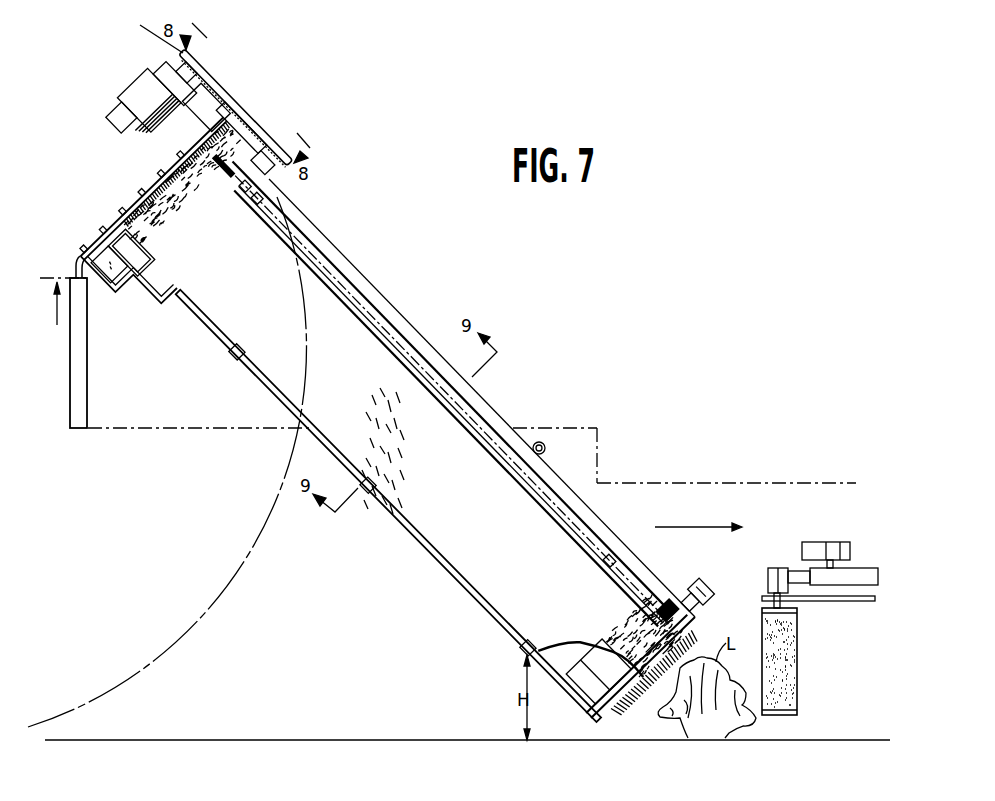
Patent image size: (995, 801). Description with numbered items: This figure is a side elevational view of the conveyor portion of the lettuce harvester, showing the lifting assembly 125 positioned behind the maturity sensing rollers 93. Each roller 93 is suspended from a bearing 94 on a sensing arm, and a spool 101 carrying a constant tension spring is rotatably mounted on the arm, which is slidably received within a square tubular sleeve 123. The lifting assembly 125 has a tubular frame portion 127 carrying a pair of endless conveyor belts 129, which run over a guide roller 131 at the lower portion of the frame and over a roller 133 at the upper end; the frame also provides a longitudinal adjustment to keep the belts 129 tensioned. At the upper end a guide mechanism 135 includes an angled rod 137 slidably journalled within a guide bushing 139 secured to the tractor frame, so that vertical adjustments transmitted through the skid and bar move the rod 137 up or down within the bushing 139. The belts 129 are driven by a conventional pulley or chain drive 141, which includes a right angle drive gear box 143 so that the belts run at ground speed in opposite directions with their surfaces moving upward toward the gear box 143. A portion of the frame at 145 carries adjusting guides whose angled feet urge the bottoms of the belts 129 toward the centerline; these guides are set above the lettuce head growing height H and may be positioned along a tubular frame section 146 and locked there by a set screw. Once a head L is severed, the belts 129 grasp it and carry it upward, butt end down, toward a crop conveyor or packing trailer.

The roller 93 is at (797, 633).
The bearing 94 is at (770, 570).
The spool 101 is at (815, 550).
The tubular sleeve 123 is at (855, 578).
The lifting assembly 125 is at (513, 415).
The tubular frame portion 127 is at (573, 665).
The endless conveyor belt 129 is at (582, 570).
The guide roller 131 is at (612, 705).
The roller 133 is at (196, 208).
The guide mechanism 135 is at (57, 322).
The angled rod 137 is at (76, 258).
The guide bushing 139 is at (82, 405).
The pulley or chain drive 141 is at (235, 95).
The right angle drive gear box 143 is at (135, 108).
The adjusting guide location 145 is at (237, 352).
The tubular frame section 146 is at (448, 557).